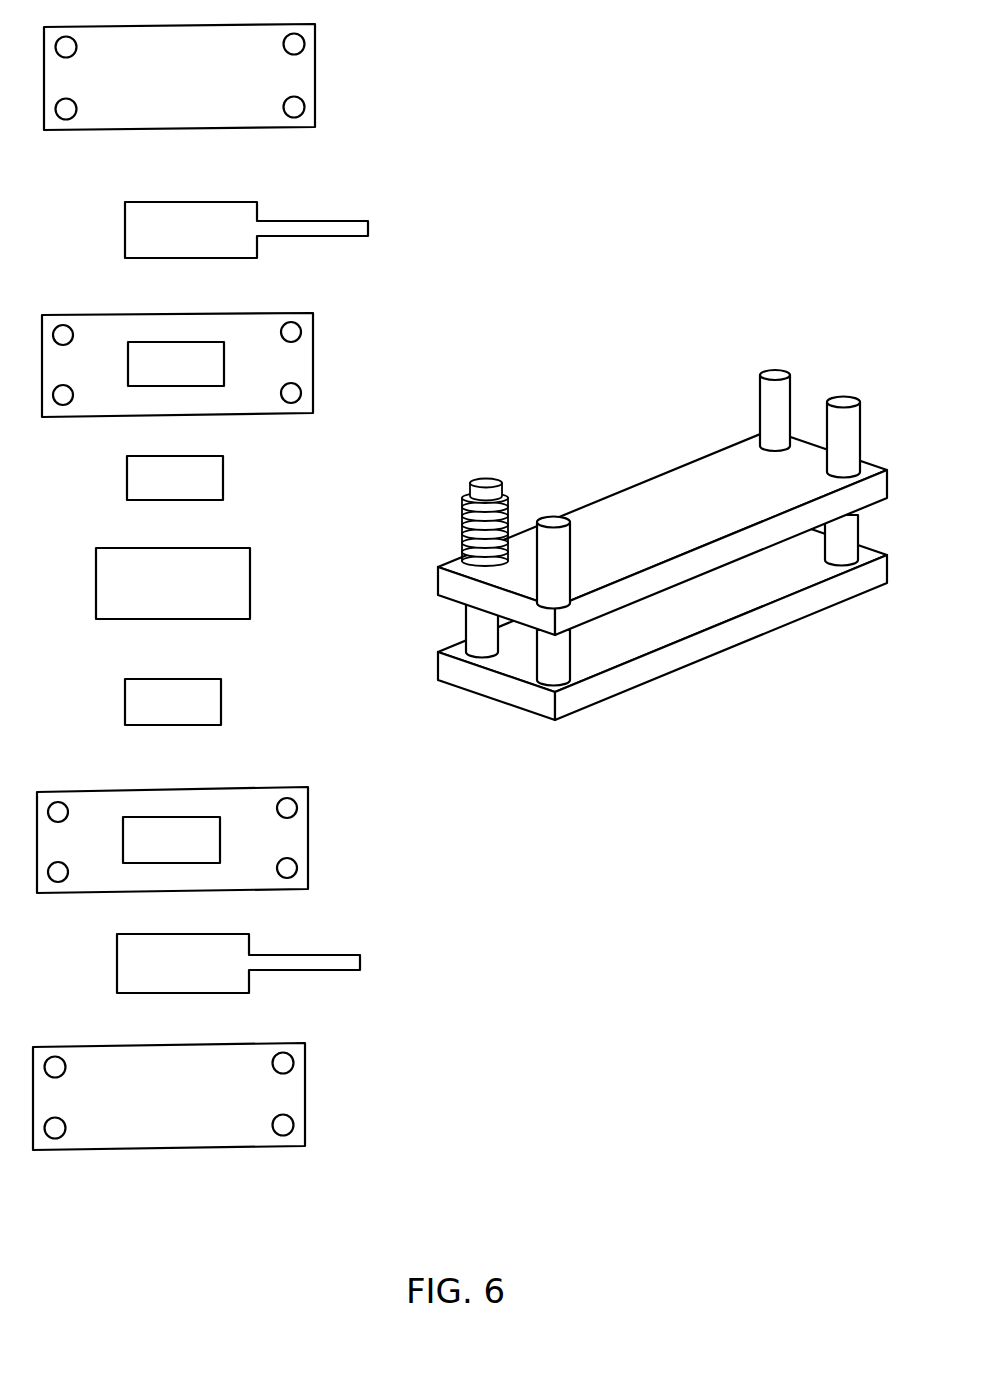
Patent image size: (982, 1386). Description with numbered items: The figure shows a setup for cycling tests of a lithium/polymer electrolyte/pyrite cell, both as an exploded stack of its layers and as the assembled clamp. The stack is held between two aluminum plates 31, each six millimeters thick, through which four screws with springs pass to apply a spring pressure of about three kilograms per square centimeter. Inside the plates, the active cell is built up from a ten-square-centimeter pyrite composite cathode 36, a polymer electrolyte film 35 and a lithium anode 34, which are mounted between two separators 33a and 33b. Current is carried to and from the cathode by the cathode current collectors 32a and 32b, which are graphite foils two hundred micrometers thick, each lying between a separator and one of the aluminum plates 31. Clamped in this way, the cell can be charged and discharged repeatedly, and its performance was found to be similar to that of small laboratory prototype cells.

The aluminum plate 31 is at (315, 72).
The cathode current collector 32a is at (360, 955).
The cathode current collector 32b is at (315, 220).
The separator 33a is at (308, 843).
The separator 33b is at (313, 362).
The lithium anode 34 is at (221, 698).
The polymer electrolyte film 35 is at (250, 580).
The pyrite composite cathode 36 is at (223, 477).